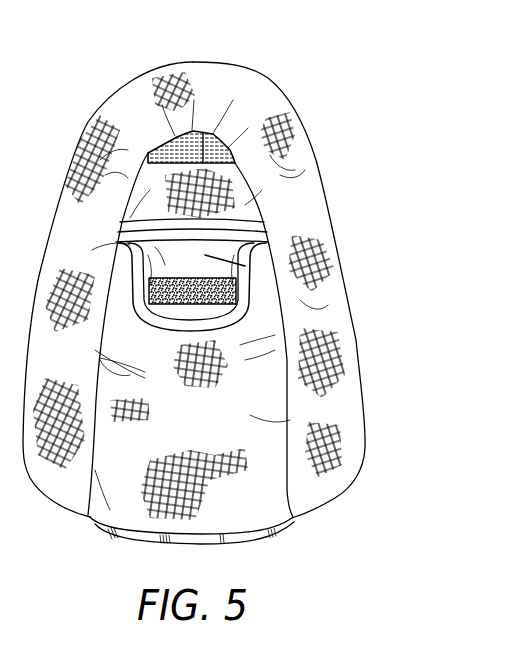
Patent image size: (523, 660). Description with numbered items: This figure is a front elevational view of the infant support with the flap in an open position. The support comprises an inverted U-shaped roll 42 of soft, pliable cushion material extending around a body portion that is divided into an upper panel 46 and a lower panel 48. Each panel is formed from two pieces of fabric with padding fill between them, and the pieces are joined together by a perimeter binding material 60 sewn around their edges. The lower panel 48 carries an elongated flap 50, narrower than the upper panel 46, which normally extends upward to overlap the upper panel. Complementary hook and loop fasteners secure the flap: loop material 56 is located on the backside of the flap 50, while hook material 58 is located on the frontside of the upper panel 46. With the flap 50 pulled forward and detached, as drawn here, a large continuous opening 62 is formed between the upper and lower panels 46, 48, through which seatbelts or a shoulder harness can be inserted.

The inverted U-shaped roll 42 is at (293, 147).
The upper panel 46 is at (238, 197).
The lower panel 48 is at (250, 413).
The flap 50 is at (247, 266).
The loop material 56 is at (223, 293).
The hook material 58 is at (203, 132).
The perimeter binding material 60 is at (133, 537).
The opening 62 is at (167, 145).